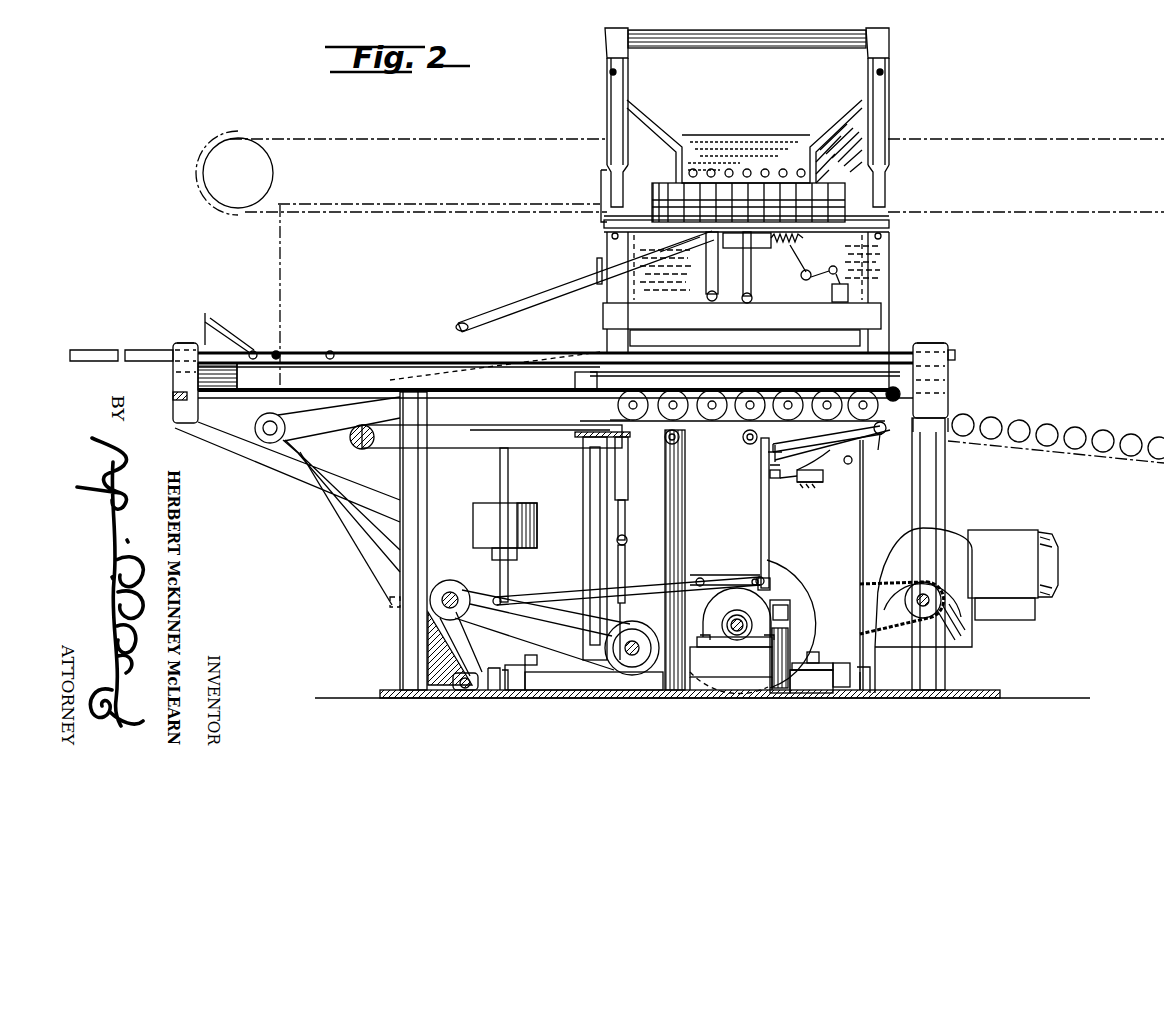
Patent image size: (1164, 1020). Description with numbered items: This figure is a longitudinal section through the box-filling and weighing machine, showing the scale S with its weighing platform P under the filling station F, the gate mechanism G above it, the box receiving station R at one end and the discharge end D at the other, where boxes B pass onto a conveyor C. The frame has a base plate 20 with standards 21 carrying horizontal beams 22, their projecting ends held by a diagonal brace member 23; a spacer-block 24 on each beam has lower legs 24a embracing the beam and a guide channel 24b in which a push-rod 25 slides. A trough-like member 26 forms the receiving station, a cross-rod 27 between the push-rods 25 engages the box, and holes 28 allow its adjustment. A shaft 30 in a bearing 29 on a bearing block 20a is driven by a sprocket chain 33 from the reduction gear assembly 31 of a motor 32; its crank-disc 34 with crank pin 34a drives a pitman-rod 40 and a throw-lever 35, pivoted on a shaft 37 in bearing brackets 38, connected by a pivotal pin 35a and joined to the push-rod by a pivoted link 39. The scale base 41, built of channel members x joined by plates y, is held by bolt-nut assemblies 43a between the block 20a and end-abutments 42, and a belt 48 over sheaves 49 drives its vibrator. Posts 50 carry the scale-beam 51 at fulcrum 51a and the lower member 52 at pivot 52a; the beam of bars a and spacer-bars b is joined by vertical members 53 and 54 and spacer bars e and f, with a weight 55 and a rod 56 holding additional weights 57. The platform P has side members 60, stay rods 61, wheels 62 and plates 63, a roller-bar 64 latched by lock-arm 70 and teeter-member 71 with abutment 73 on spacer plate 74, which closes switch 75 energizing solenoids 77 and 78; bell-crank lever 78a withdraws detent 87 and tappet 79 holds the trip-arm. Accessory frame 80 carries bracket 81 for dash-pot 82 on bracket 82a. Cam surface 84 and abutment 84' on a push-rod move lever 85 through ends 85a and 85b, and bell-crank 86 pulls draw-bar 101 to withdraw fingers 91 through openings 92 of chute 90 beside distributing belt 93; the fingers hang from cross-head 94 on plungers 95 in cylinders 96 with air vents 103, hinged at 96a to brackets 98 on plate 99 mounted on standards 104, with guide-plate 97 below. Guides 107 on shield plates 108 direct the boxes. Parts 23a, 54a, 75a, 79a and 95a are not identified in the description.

The base plate 20 is at (436, 698).
The bearing block 20a is at (731, 668).
The standards 21 is at (400, 655).
The horizontal beams 22 is at (584, 371).
The diagonal brace member 23 is at (238, 453).
The brace bracket 23a is at (190, 398).
The spacer-block 24 is at (174, 366).
The lower legs 24a is at (950, 406).
The guide channel 24b is at (182, 343).
The push-rod 25 is at (414, 353).
The trough-like member 26 is at (372, 370).
The cross-rod 27 is at (279, 351).
The holes 28 is at (254, 351).
The bearing 29 is at (752, 615).
The shaft 30 is at (736, 615).
The reduction gear assembly 31 is at (944, 572).
The motor 32 is at (1013, 575).
The sprocket chain 33 is at (860, 586).
The crank-disc 34 is at (792, 612).
The crank pin 34a is at (696, 635).
The throw-lever 35 is at (345, 530).
The pivotal pin 35a is at (388, 600).
The shaft 37 is at (465, 691).
The bearing brackets 38 is at (490, 692).
The pivoted link 39 is at (292, 408).
The pitman-rod 40 is at (505, 606).
The scale base 41 is at (812, 694).
The end-abutments 42 is at (506, 692).
The hold-down bolt-nut assembly 43a is at (520, 648).
The belt 48 is at (575, 620).
The sheaves 49 is at (447, 581).
The posts 50 is at (685, 508).
The scale-beam 51 is at (486, 428).
The fulcrum pivot 51a is at (682, 437).
The lower horizontal member 52 is at (695, 578).
The pivot 52a is at (688, 574).
The vertical member 53 is at (500, 481).
The vertical stabilizing member 54 is at (769, 535).
The pivot 54a is at (768, 572).
The weight 55 is at (473, 531).
The horizontal rod 56 is at (366, 449).
The additional weights 57 is at (356, 447).
The side members 60 is at (858, 393).
The stay rods 61 is at (776, 398).
The wheels 62 is at (818, 398).
The horizontal plate 63 is at (836, 447).
The roller-bar 64 is at (900, 393).
The lock-arm 70 is at (886, 431).
The teeter-member 71 is at (798, 444).
The abutment 73 is at (826, 462).
The transverse spacer plate 74 is at (824, 478).
The electric switch 75 is at (795, 480).
The link 75a is at (816, 485).
The solenoid 77 is at (790, 600).
The solenoid 78 is at (848, 292).
The bell-crank lever 78a is at (838, 270).
The tappet 79 is at (770, 462).
The pin 79a is at (776, 480).
The accessory supporting frame 80 is at (630, 492).
The bracket 81 is at (628, 545).
The dash-pot 82 is at (615, 480).
The bracket 82a is at (596, 455).
The inclined cam surface 84 is at (229, 324).
The abutment 84' is at (191, 323).
The gate opening lever 85 is at (582, 284).
The free end of lever 85a is at (470, 320).
The other end of lever 85b is at (672, 250).
The bell-crank lever 86 is at (718, 290).
The spring-pressed detent 87 is at (790, 250).
The chute 90 is at (736, 140).
The fingers 91 is at (830, 215).
The openings 92 is at (801, 168).
The distributing belt 93 is at (996, 137).
The cross-head 94 is at (856, 228).
The plungers 95 is at (608, 186).
The foot beam 95a is at (604, 230).
The cylinders 96 is at (610, 96).
The hinge 96a is at (606, 44).
The stationary guide-plate 97 is at (658, 206).
The brackets 98 is at (608, 120).
The gate supporting plate 99 is at (889, 245).
The draw-bar 101 is at (750, 290).
The adjustable air vents 103 is at (610, 72).
The vertical standards 104 is at (616, 413).
The guides 107 is at (742, 316).
The angular shield plates 108 is at (737, 341).
The box B is at (287, 251).
The conveyor C is at (1032, 420).
The discharge end D is at (969, 393).
The filling station F is at (884, 311).
The gate mechanism G is at (785, 136).
The weighing platform P is at (610, 408).
The box receiving station R is at (255, 301).
The scale S is at (534, 455).
The horizontal bars a is at (462, 448).
The spacer-bars b is at (574, 436).
The spacer bar e is at (760, 578).
The spacer-bar f is at (664, 596).
The channel members x is at (640, 692).
The plates y is at (525, 660).